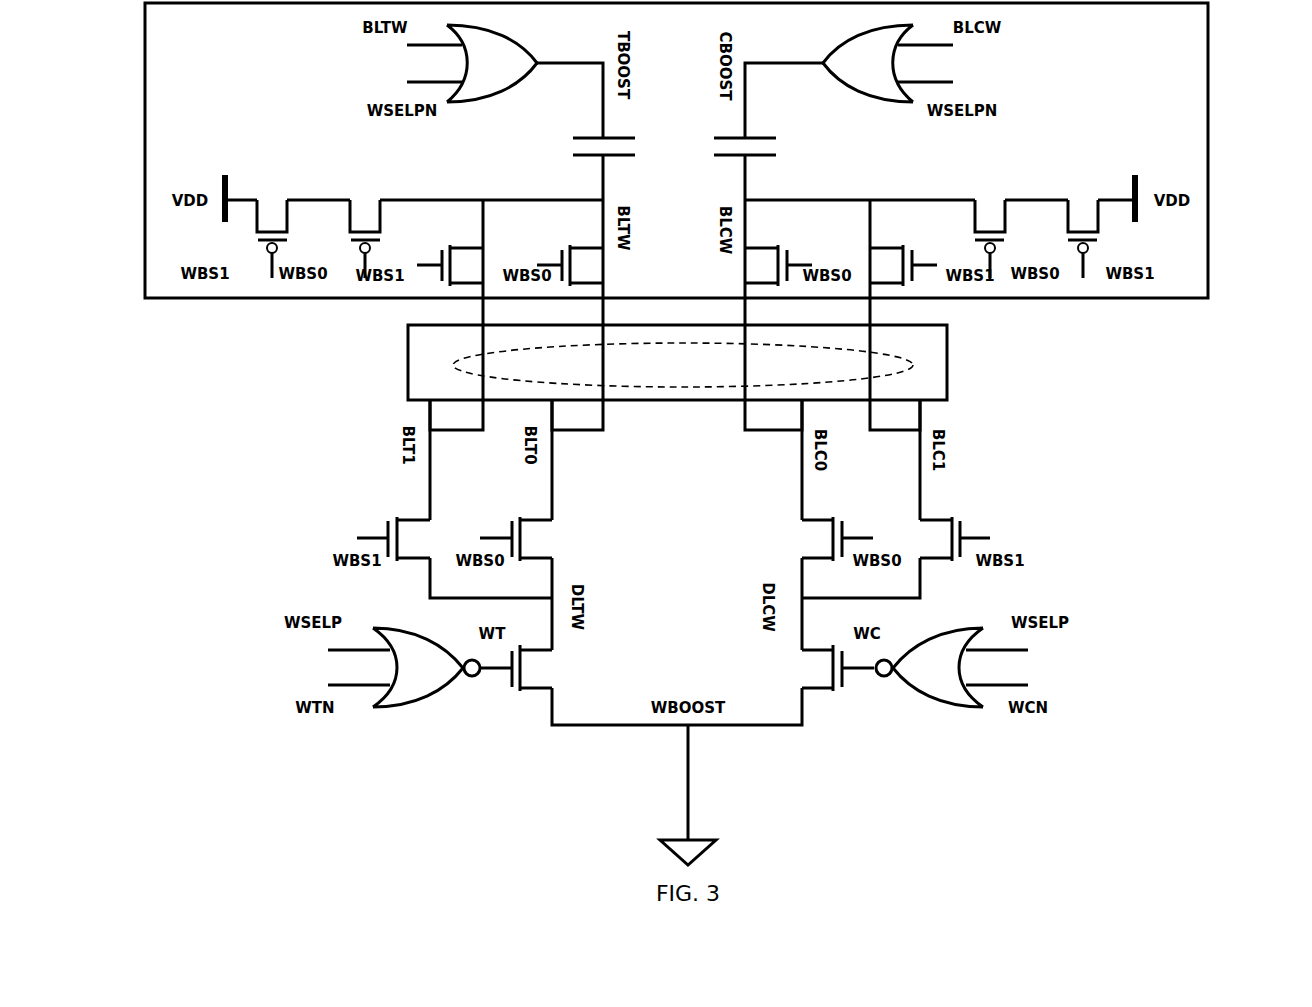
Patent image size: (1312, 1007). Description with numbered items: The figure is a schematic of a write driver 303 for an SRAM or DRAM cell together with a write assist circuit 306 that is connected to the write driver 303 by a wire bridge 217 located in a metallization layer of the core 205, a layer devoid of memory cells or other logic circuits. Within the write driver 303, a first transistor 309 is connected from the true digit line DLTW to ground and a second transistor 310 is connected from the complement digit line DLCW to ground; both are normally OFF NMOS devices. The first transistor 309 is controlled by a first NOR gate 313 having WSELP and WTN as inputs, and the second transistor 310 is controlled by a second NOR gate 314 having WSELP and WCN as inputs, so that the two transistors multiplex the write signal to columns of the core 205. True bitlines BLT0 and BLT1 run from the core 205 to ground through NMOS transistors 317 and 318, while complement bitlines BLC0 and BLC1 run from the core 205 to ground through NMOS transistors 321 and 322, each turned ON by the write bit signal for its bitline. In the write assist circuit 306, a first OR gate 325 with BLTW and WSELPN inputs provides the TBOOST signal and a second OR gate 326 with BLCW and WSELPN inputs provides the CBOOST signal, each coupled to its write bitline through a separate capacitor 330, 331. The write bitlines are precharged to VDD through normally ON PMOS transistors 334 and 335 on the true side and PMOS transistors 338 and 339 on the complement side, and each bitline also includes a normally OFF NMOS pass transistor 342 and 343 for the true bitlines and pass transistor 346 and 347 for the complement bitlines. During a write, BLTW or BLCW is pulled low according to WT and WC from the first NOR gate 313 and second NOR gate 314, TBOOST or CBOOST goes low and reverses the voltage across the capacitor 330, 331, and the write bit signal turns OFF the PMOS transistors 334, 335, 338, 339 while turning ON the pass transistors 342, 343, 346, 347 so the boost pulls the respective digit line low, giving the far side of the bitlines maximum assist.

The core 205 is at (950, 362).
The wire bridge 217 is at (453, 363).
The write driver 303 is at (204, 591).
The write assist circuit 306 is at (1210, 152).
The first transistor 309 is at (563, 668).
The second transistor 310 is at (797, 668).
The first NOR gate 313 is at (425, 705).
The second NOR gate 314 is at (928, 705).
The transistor 317 is at (502, 532).
The transistor 318 is at (380, 532).
The transistor 321 is at (850, 532).
The transistor 322 is at (968, 532).
The first OR gate 325 is at (507, 100).
The second OR gate 326 is at (857, 97).
The capacitor 330 is at (637, 147).
The capacitor 331 is at (712, 147).
The PMOS transistor 334 is at (273, 200).
The PMOS transistor 335 is at (367, 200).
The PMOS transistor 338 is at (990, 200).
The PMOS transistor 339 is at (1085, 200).
The pass transistor 342 is at (435, 257).
The pass transistor 343 is at (558, 257).
The pass transistor 346 is at (797, 258).
The pass transistor 347 is at (917, 258).